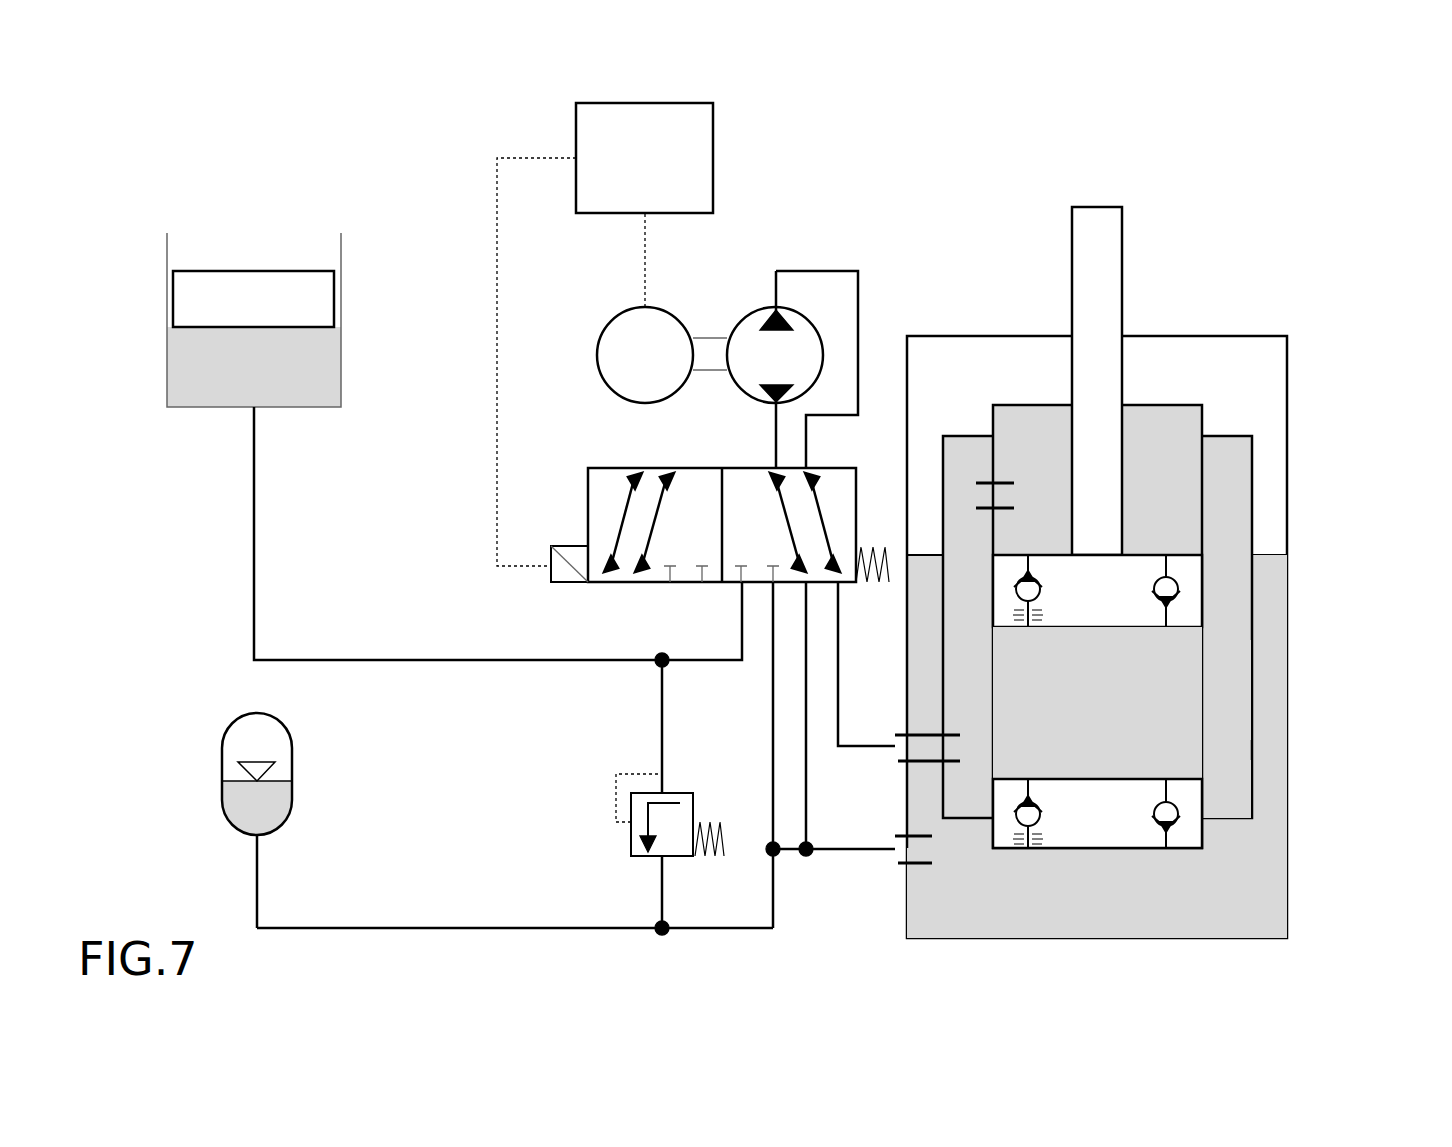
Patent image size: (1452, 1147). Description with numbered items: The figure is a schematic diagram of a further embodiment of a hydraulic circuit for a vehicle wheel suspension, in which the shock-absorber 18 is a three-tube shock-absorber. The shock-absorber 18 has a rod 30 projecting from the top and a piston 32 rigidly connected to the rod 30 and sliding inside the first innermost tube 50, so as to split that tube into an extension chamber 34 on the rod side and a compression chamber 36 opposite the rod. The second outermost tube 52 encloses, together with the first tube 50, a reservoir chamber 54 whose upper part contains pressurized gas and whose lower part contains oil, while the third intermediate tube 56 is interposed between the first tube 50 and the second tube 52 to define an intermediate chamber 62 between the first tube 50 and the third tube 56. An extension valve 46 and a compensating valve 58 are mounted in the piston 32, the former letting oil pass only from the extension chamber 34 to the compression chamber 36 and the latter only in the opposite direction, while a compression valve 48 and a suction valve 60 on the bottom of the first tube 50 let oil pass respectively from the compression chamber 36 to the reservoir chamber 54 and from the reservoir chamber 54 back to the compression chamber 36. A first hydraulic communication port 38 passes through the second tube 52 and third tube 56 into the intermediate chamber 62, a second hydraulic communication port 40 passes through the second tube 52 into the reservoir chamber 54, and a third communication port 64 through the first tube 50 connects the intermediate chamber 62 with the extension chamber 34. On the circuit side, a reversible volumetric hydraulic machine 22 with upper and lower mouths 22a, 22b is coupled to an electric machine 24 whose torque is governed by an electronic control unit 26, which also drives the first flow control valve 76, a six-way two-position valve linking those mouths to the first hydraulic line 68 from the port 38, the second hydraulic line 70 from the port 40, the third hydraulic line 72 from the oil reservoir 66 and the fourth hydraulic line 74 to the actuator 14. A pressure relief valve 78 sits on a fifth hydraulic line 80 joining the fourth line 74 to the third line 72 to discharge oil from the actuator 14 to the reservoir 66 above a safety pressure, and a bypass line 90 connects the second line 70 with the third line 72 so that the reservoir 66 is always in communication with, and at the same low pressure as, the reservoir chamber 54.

The actuator 14 is at (167, 315).
The shock-absorber 18 is at (1298, 372).
The volumetric hydraulic machine 22 is at (761, 331).
The upper mouth of the hydraulic machine 22a is at (790, 322).
The lower mouth of the hydraulic machine 22b is at (765, 397).
The electric machine 24 is at (600, 345).
The electronic control unit 26 is at (600, 103).
The rod 30 is at (1122, 232).
The piston 32 is at (1200, 594).
The extension chamber 34 is at (1183, 465).
The compression chamber 36 is at (1190, 745).
The first hydraulic communication port 38 is at (895, 750).
The second hydraulic communication port 40 is at (925, 855).
The extension valve 46 is at (1040, 576).
The compression valve 48 is at (1040, 800).
The first innermost tube 50 is at (1200, 505).
The second outermost tube 52 is at (1290, 888).
The reservoir chamber 54 is at (1273, 825).
The third intermediate tube 56 is at (1252, 780).
The compensating valve 58 is at (1180, 605).
The suction valve 60 is at (1160, 826).
The intermediate chamber 62 is at (1240, 683).
The third communication port 64 is at (976, 495).
The oil reservoir 66 is at (230, 750).
The first hydraulic line 68 is at (838, 630).
The second hydraulic line 70 is at (850, 849).
The third hydraulic line 72 is at (490, 928).
The fourth hydraulic line 74 is at (460, 660).
The first flow control valve 76 is at (588, 500).
The pressure relief valve 78 is at (630, 826).
The fifth hydraulic line 80 is at (662, 728).
The bypass line 90 is at (773, 849).